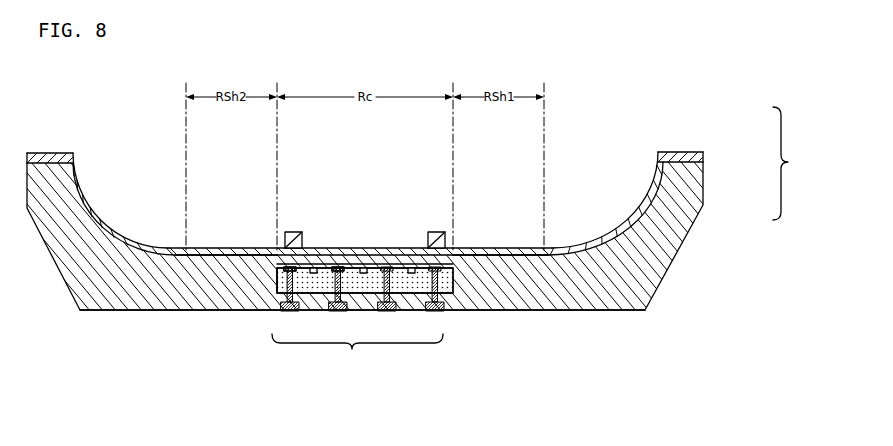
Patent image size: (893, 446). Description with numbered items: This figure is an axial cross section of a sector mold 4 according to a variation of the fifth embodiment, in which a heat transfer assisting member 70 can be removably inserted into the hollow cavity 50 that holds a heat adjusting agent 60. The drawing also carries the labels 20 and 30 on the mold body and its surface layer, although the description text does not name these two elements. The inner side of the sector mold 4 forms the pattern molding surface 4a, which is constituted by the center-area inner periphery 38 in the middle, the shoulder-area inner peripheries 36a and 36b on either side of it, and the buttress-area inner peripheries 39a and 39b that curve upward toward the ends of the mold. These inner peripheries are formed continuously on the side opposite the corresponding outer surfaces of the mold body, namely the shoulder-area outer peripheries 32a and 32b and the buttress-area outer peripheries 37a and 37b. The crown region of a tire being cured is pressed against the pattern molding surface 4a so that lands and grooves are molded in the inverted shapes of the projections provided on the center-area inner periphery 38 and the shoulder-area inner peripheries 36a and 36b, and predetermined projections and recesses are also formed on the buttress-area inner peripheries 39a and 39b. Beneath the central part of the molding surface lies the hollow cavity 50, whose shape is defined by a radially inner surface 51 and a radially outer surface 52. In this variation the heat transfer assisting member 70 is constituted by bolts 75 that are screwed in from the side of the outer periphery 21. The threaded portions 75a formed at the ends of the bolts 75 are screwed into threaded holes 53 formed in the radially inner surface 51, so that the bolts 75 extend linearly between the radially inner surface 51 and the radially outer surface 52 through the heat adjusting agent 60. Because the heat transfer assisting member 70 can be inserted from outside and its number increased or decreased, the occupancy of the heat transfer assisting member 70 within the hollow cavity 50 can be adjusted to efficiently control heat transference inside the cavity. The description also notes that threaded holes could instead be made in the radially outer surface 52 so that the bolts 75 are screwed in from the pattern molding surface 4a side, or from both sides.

The sector mold 4 is at (787, 163).
The pattern molding surface 4a is at (324, 156).
The base 20 is at (712, 196).
The outer periphery 21 is at (183, 311).
The coating layer 30 is at (706, 133).
The shoulder-area outer periphery 32a is at (507, 257).
The shoulder-area outer periphery 32b is at (242, 257).
The shoulder-area inner periphery 36a is at (508, 247).
The shoulder-area inner periphery 36b is at (233, 247).
The buttress-area outer periphery 37a is at (618, 228).
The buttress-area outer periphery 37b is at (130, 235).
The center-area inner periphery 38 is at (340, 262).
The buttress-area inner periphery 39a is at (628, 211).
The buttress-area inner periphery 39b is at (125, 233).
The hollow cavity 50 is at (453, 244).
The radially inner surface 51 is at (277, 275).
The radially outer surface 52 is at (303, 266).
The threaded hole 53 is at (412, 268).
The heat adjusting agent 60 is at (367, 278).
The heat transfer assisting member 70 is at (357, 351).
The bolt 75 is at (286, 312).
The threaded portion 75a is at (343, 266).